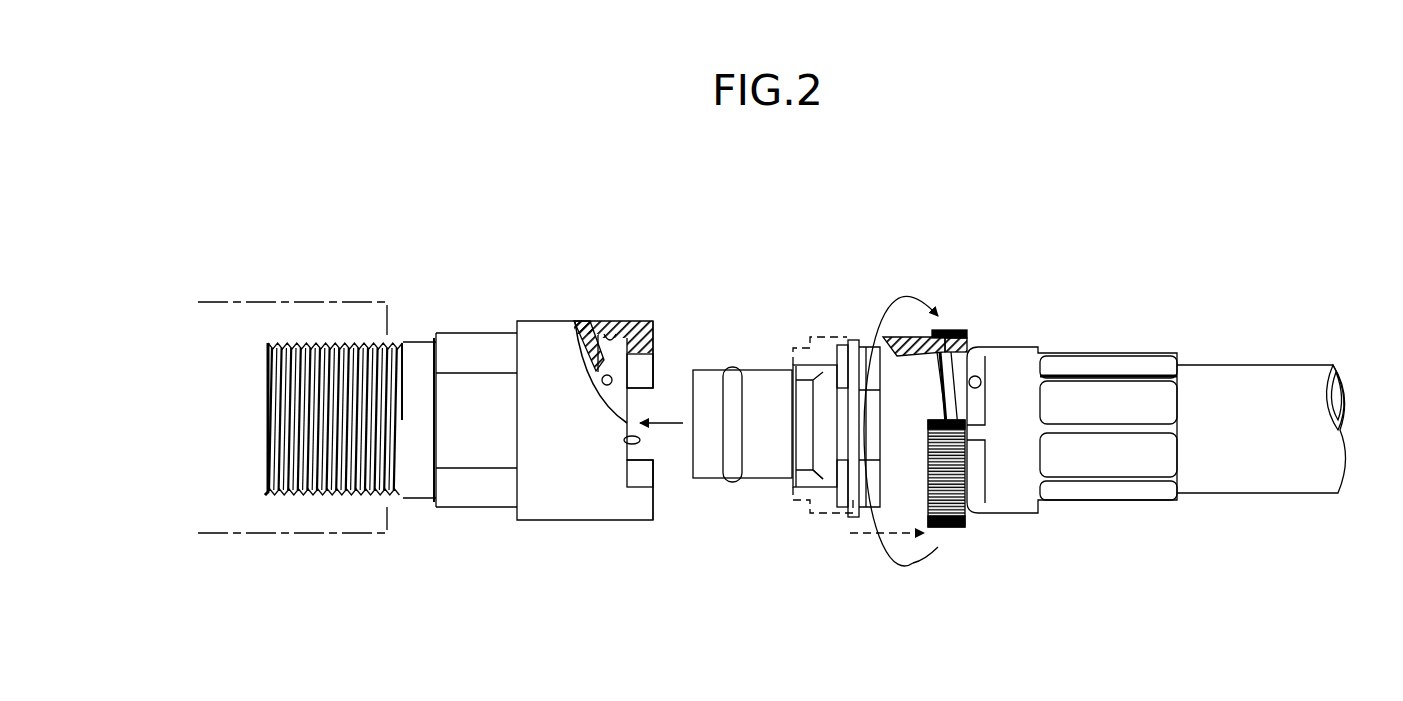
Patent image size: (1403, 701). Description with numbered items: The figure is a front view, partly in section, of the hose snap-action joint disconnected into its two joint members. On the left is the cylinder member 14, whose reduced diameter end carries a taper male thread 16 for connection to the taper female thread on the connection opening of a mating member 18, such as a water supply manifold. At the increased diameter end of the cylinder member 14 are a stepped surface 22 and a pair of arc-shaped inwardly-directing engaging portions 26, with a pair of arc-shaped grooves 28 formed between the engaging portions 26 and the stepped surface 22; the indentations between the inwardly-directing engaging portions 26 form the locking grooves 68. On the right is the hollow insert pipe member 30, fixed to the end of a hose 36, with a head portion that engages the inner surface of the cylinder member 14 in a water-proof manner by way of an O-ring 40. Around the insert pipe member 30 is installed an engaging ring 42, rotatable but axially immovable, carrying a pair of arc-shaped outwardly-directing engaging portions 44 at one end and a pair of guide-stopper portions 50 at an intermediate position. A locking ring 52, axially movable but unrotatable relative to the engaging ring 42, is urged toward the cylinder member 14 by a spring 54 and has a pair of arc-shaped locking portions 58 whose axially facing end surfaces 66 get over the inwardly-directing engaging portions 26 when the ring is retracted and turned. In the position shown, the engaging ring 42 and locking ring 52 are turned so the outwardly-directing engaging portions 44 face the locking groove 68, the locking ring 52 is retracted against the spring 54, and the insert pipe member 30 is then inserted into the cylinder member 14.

The cylinder member 14 is at (538, 308).
The taper male thread 16 is at (318, 497).
The mating member 18 is at (234, 300).
The stepped surface 22 is at (602, 382).
The inwardly-directing engaging portions 26 is at (643, 330).
The arc-shaped grooves 28 is at (612, 320).
The insert pipe member 30 is at (768, 380).
The hose 36 is at (1265, 483).
The O-ring 40 is at (733, 470).
The engaging ring 42 is at (823, 352).
The outwardly-directing engaging portions 44 is at (805, 460).
The guide-stopper portions 50 is at (858, 494).
The locking ring 52 is at (955, 535).
The spring 54 is at (981, 379).
The locking portions 58 is at (918, 302).
The end surfaces 66 is at (833, 508).
The locking grooves 68 is at (624, 440).